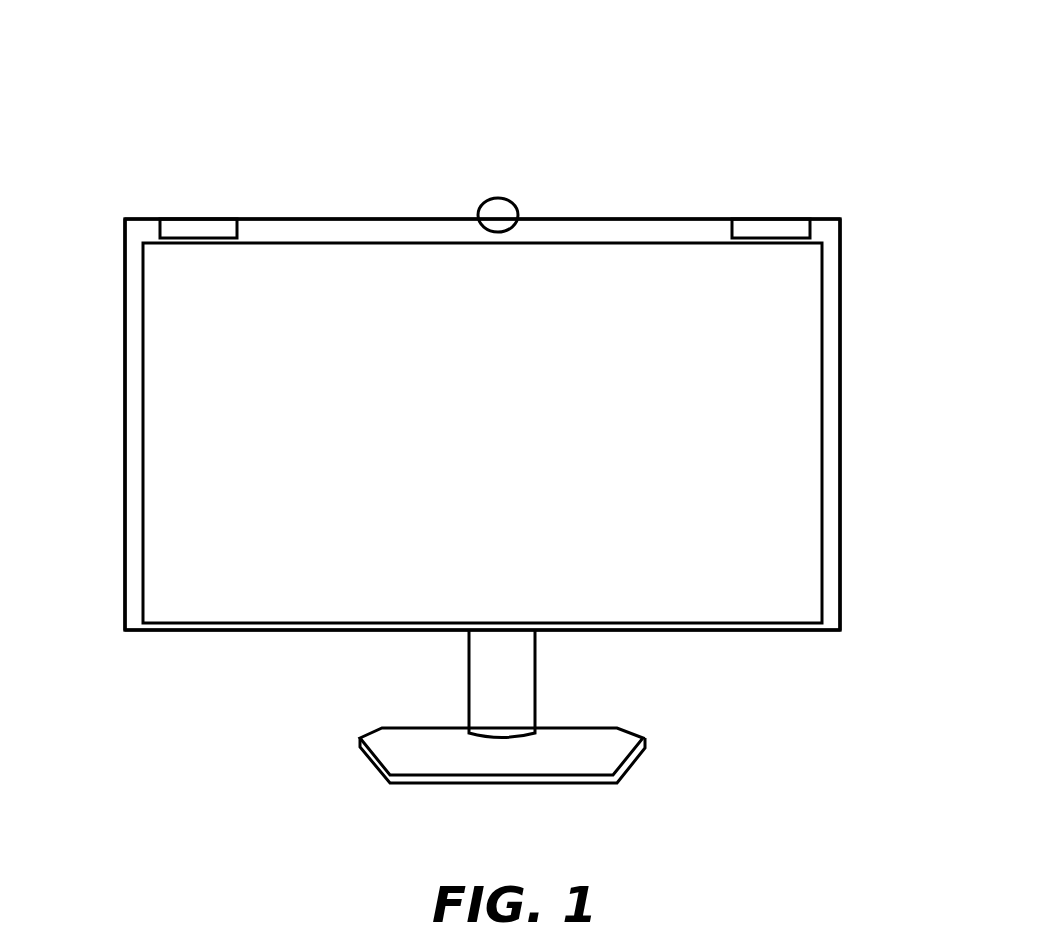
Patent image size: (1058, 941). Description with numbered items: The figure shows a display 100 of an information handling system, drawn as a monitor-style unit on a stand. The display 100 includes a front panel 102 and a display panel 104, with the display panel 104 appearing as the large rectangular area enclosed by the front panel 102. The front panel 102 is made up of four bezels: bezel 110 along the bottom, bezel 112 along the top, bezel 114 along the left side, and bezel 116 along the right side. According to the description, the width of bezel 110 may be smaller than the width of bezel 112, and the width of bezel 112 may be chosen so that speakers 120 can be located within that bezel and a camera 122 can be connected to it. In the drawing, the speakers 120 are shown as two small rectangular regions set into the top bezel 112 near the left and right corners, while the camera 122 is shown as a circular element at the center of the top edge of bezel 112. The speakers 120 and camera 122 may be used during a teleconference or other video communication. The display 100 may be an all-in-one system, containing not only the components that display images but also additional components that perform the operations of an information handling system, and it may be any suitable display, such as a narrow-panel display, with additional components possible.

The display 100 is at (798, 115).
The front panel 102 is at (370, 219).
The display panel 104 is at (802, 604).
The bezel 110 is at (163, 632).
The bezel 112 is at (598, 230).
The bezel 114 is at (138, 418).
The bezel 116 is at (828, 416).
The speakers 120 is at (185, 228).
The camera 122 is at (493, 215).